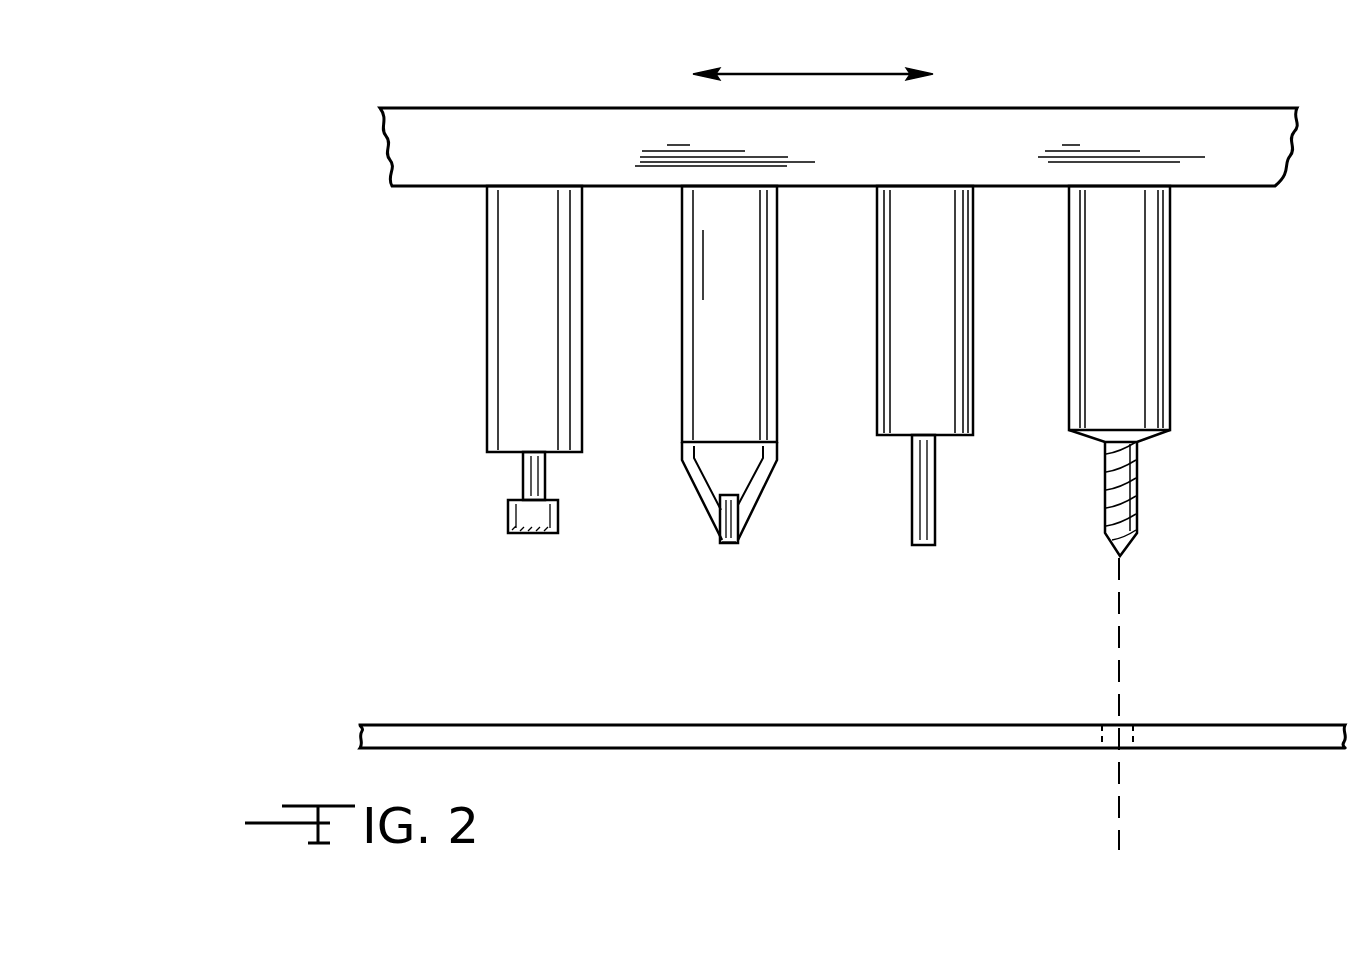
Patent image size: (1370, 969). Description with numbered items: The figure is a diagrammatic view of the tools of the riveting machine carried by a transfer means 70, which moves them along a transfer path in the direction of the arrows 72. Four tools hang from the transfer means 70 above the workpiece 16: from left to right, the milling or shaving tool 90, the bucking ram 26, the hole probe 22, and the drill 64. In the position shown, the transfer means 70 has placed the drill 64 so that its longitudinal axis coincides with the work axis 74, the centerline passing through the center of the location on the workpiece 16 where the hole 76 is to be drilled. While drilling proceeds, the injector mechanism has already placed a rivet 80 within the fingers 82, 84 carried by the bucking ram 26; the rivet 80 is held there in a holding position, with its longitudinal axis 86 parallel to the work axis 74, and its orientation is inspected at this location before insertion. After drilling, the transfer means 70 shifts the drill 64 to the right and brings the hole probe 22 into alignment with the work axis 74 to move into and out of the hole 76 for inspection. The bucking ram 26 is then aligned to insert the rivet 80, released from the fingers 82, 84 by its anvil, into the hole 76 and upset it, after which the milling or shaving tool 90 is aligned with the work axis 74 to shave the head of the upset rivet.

The workpiece 16 is at (1273, 724).
The hole probe 22 is at (890, 322).
The bucking ram 26 is at (703, 322).
The drill 64 is at (1148, 308).
The transfer means 70 is at (1153, 130).
The arrows 72 is at (828, 74).
The work axis 74 is at (1120, 620).
The hole 76 is at (1128, 730).
The rivet 80 is at (741, 535).
The finger 82 is at (692, 482).
The finger 84 is at (768, 478).
The longitudinal axis of rivet 86 is at (778, 574).
The milling or shaving tool 90 is at (505, 333).